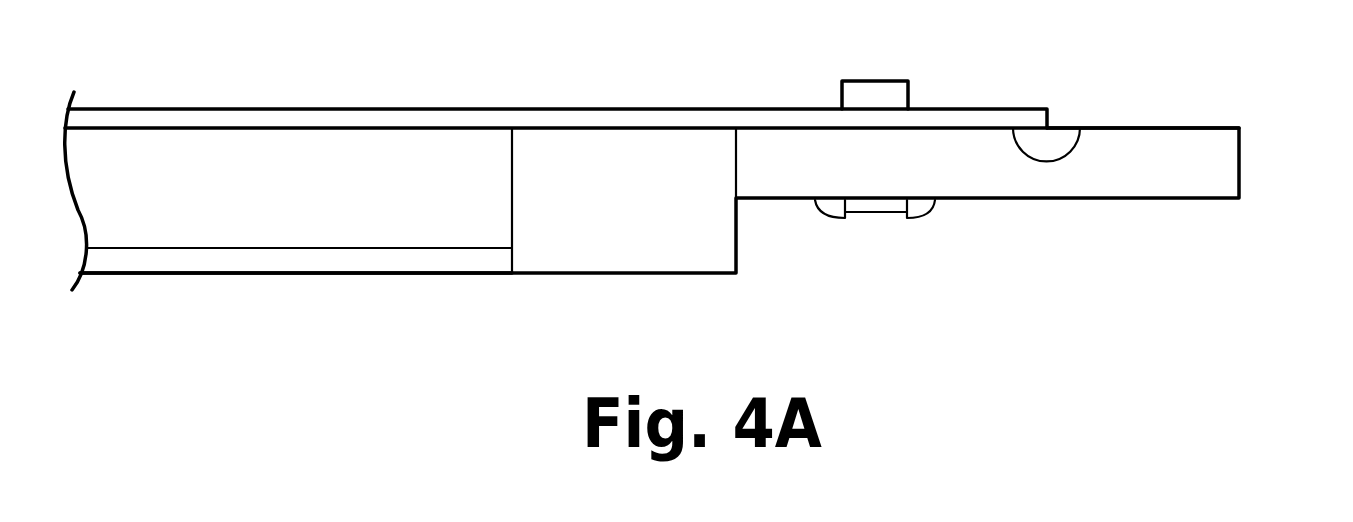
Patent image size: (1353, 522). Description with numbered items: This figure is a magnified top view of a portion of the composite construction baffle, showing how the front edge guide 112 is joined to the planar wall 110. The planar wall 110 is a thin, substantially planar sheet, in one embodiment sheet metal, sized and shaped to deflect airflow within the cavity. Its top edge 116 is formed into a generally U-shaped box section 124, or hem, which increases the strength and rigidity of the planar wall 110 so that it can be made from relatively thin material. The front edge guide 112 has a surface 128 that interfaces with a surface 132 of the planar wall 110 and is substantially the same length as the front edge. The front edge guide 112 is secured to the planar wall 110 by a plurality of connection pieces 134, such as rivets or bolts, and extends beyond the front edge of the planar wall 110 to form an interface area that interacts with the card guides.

The planar wall 110 is at (590, 118).
The front edge guide 112 is at (1222, 158).
The top edge 116 is at (257, 215).
The box section 124 is at (420, 225).
The surface 128 is at (1147, 128).
The surface 132 is at (1073, 138).
The connection pieces 134 is at (890, 217).